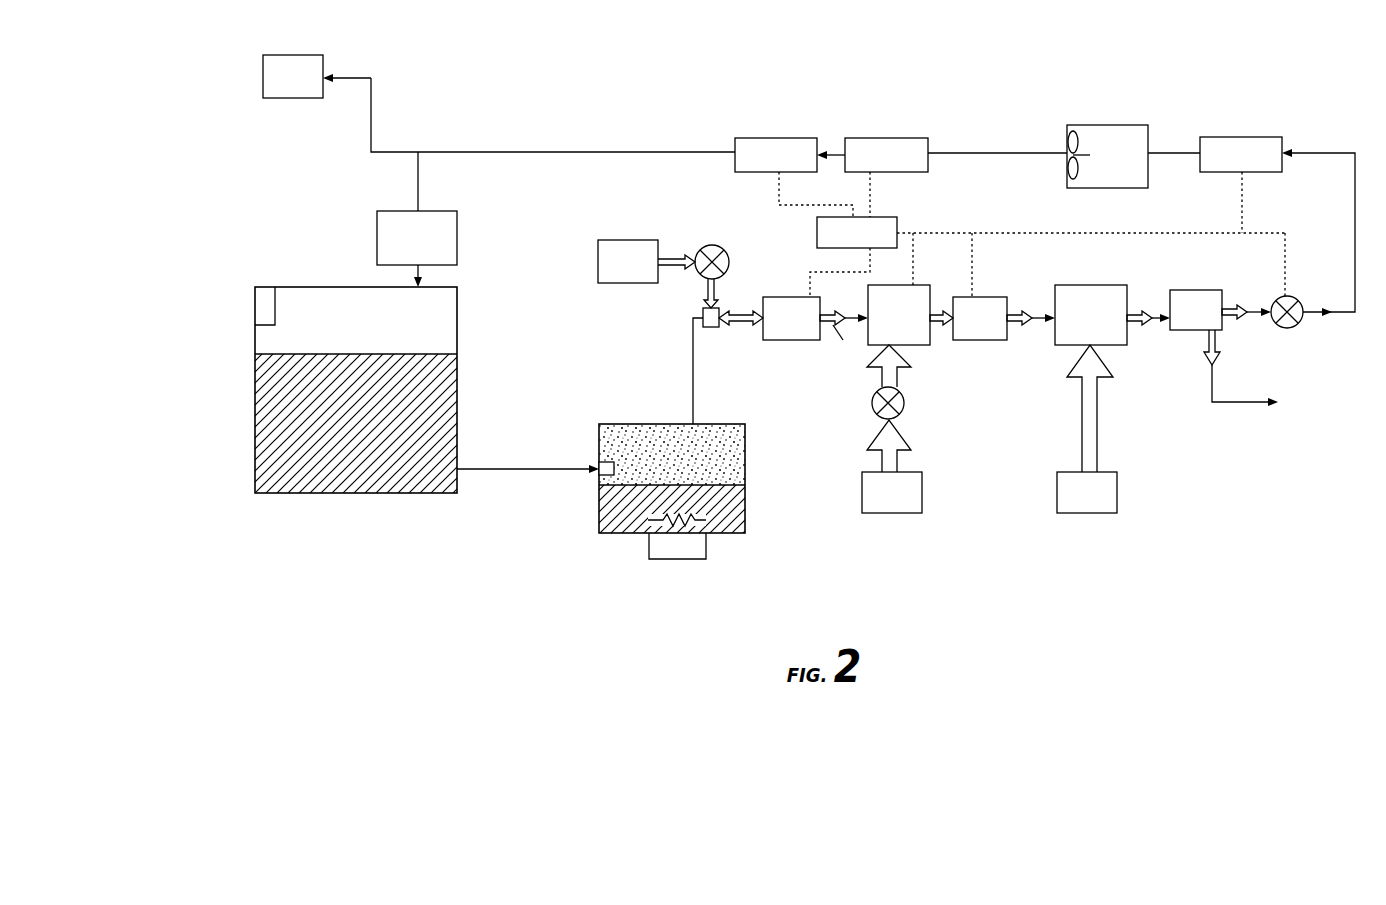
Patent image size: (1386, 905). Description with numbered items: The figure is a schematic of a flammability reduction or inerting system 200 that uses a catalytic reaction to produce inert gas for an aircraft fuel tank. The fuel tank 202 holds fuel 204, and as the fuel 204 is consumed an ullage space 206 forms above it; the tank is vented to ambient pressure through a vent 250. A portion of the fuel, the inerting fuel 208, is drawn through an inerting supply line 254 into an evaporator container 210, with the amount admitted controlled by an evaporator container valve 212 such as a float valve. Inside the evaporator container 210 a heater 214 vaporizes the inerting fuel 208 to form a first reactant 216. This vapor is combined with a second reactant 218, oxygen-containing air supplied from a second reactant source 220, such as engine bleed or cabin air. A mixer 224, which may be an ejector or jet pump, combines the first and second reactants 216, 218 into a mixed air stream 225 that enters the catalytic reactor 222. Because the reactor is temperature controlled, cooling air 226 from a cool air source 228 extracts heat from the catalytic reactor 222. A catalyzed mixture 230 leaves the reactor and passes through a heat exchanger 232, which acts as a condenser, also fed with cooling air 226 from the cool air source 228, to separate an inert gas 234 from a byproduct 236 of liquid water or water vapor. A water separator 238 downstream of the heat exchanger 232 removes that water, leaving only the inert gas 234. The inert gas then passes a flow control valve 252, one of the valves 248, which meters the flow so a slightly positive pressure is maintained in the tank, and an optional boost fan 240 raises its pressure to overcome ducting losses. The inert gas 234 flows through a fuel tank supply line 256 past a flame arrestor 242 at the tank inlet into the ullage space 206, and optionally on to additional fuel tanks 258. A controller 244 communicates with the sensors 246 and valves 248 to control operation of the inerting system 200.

The inerting system 200 is at (441, 62).
The fuel tank 202 is at (335, 287).
The fuel 204 is at (346, 480).
The ullage space 206 is at (440, 330).
The inerting fuel 208 is at (745, 503).
The evaporator container 210 is at (622, 424).
The evaporator container valve 212 is at (597, 478).
The heater 214 is at (706, 545).
The first reactant 216 is at (745, 452).
The second reactant 218 is at (690, 256).
The second reactant source 220 is at (628, 261).
The catalytic reactor 222 is at (886, 315).
The mixer 224 is at (713, 328).
The mixed air stream 225 is at (843, 340).
The cooling air 226 is at (897, 378).
The cool air source 228 is at (989, 492).
The catalyzed mixture 230 is at (938, 312).
The heat exchanger 232 is at (1112, 315).
The inert gas 234 is at (1235, 307).
The byproduct 236 is at (1200, 345).
The water separator 238 is at (1196, 310).
The fan 240 is at (1008, 156).
The flame arrestor 242 is at (417, 249).
The controller 244 is at (1032, 234).
The sensors 246 is at (1000, 238).
The valves 248 is at (719, 247).
The vent 250 is at (268, 294).
The flow control valve 252 is at (1285, 338).
The inerting supply line 254 is at (504, 480).
The fuel tank supply line 256 is at (540, 152).
The additional fuel tanks 258 is at (317, 76).